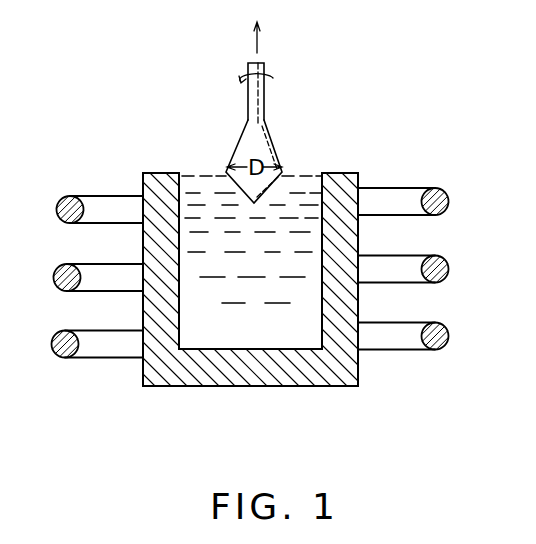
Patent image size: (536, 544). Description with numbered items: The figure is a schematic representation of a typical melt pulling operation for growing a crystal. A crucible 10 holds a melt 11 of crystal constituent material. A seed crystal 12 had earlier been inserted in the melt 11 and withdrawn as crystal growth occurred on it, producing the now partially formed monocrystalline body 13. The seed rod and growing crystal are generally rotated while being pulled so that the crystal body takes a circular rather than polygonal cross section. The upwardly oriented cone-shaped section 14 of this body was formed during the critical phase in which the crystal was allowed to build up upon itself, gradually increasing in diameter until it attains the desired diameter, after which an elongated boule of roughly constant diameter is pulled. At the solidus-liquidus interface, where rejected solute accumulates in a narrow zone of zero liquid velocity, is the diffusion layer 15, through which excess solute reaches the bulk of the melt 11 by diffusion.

The crucible 10 is at (157, 248).
The melt 11 is at (315, 240).
The seed crystal 12 is at (251, 108).
The partially formed monocrystalline body 13 is at (289, 133).
The cone-shaped section 14 is at (245, 145).
The diffusion layer 15 is at (300, 187).